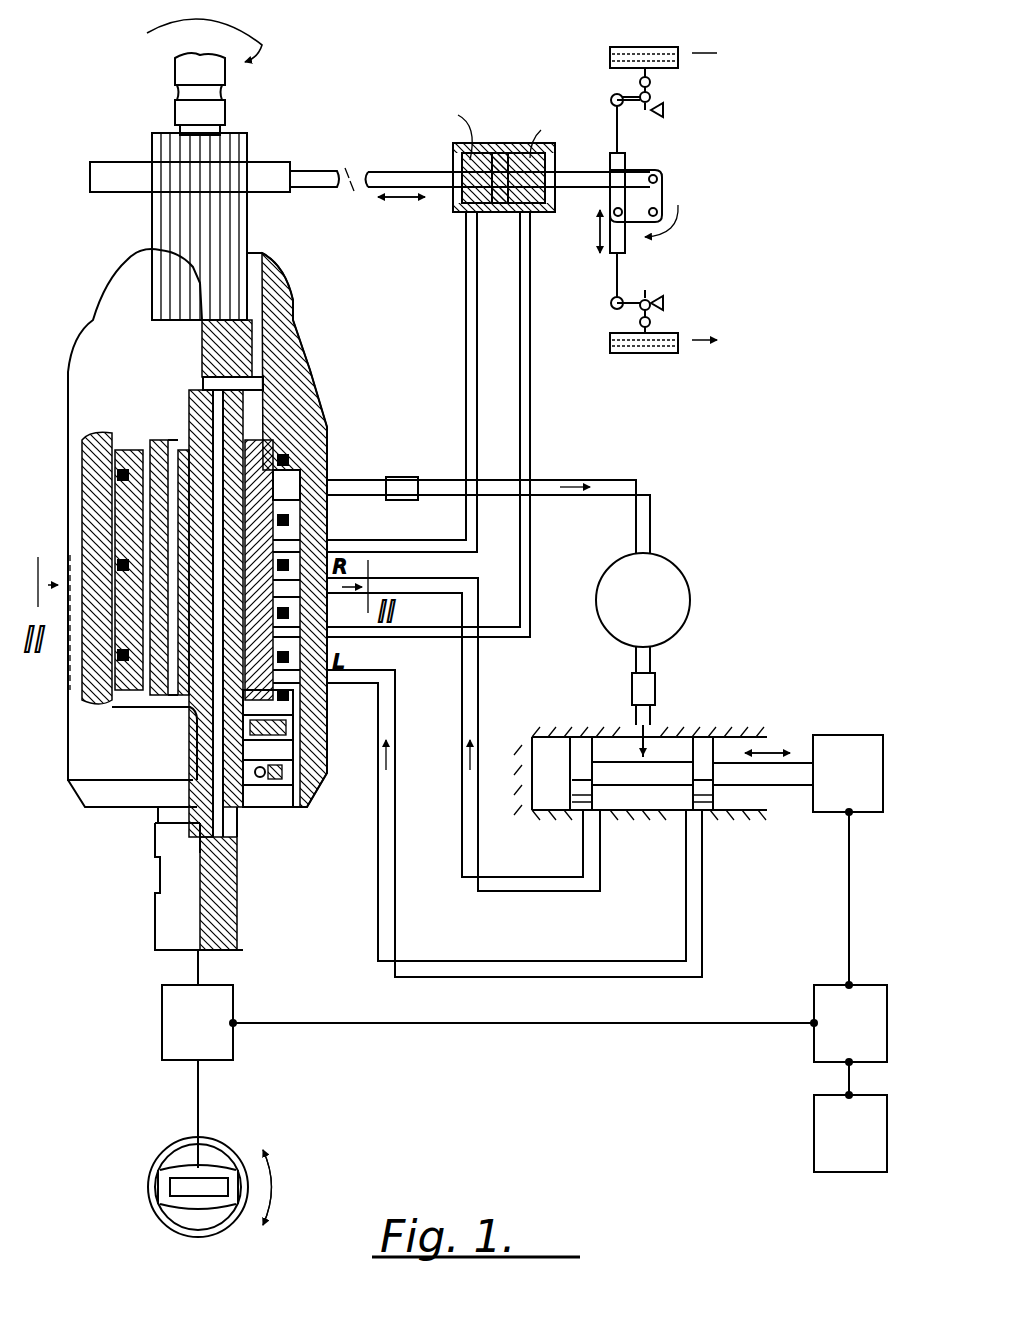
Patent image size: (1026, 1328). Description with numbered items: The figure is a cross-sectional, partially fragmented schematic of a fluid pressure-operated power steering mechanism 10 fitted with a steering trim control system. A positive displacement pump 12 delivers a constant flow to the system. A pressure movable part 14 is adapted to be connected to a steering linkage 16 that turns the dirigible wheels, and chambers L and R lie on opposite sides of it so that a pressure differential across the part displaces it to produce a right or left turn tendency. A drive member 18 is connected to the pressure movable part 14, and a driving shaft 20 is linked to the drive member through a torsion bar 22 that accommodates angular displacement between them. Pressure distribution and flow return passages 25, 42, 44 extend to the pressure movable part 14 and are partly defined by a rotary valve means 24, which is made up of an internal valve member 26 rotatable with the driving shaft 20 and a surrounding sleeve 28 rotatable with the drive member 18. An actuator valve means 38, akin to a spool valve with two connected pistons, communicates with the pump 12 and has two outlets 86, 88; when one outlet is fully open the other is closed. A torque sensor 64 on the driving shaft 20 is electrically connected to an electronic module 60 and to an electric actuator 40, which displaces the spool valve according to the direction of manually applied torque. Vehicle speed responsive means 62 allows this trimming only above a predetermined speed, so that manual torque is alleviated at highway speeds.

The power steering mechanism 10 is at (344, 408).
The pump 12 is at (665, 575).
The pressure movable part 14 is at (500, 165).
The steering linkage 16 is at (638, 215).
The drive member 18 is at (100, 176).
The driving shaft 20 is at (160, 912).
The torsion bar 22 is at (205, 440).
The rotary valve means 24 is at (313, 800).
The pressure distribution and flow return passage 25 is at (290, 535).
The internal valve member 26 is at (166, 697).
The surrounding sleeve 28 is at (125, 698).
The actuator valve means 38 is at (668, 745).
The electric actuator 40 is at (818, 815).
The pressure distribution and flow return passage 42 is at (467, 290).
The pressure distribution and flow return passage 44 is at (531, 385).
The electronic module 60 is at (814, 992).
The vehicle speed responsive means 62 is at (814, 1152).
The torque sensor 64 is at (162, 1003).
The outlet 86 is at (511, 888).
The outlet 88 is at (507, 975).